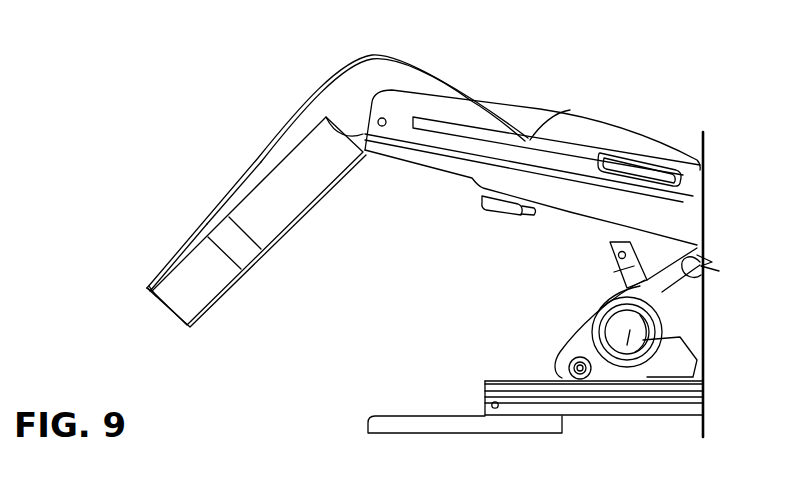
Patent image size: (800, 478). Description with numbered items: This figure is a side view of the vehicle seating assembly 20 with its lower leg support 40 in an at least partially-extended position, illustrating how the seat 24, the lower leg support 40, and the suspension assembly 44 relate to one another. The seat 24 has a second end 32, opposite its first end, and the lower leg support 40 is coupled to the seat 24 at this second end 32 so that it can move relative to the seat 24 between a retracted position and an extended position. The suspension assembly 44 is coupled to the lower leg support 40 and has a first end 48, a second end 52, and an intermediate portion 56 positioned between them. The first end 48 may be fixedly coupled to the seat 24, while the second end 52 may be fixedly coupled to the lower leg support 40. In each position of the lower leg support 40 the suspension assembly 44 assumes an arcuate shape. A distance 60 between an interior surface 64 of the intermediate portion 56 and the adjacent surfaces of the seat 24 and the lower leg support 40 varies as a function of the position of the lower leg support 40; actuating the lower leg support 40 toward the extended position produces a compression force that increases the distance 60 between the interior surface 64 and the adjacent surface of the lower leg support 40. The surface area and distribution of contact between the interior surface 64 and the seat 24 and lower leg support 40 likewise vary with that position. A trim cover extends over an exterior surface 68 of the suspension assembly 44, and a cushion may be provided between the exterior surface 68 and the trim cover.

The vehicle seating assembly 20 is at (90, 177).
The seat 24 is at (706, 224).
The second end 32 is at (380, 150).
The lower leg support 40 is at (213, 294).
The suspension assembly 44 is at (414, 63).
The first end 48 is at (548, 113).
The second end 52 is at (146, 289).
The intermediate portion 56 is at (253, 163).
The distance 60 is at (282, 145).
The interior surface 64 is at (336, 88).
The exterior surface 68 is at (210, 211).